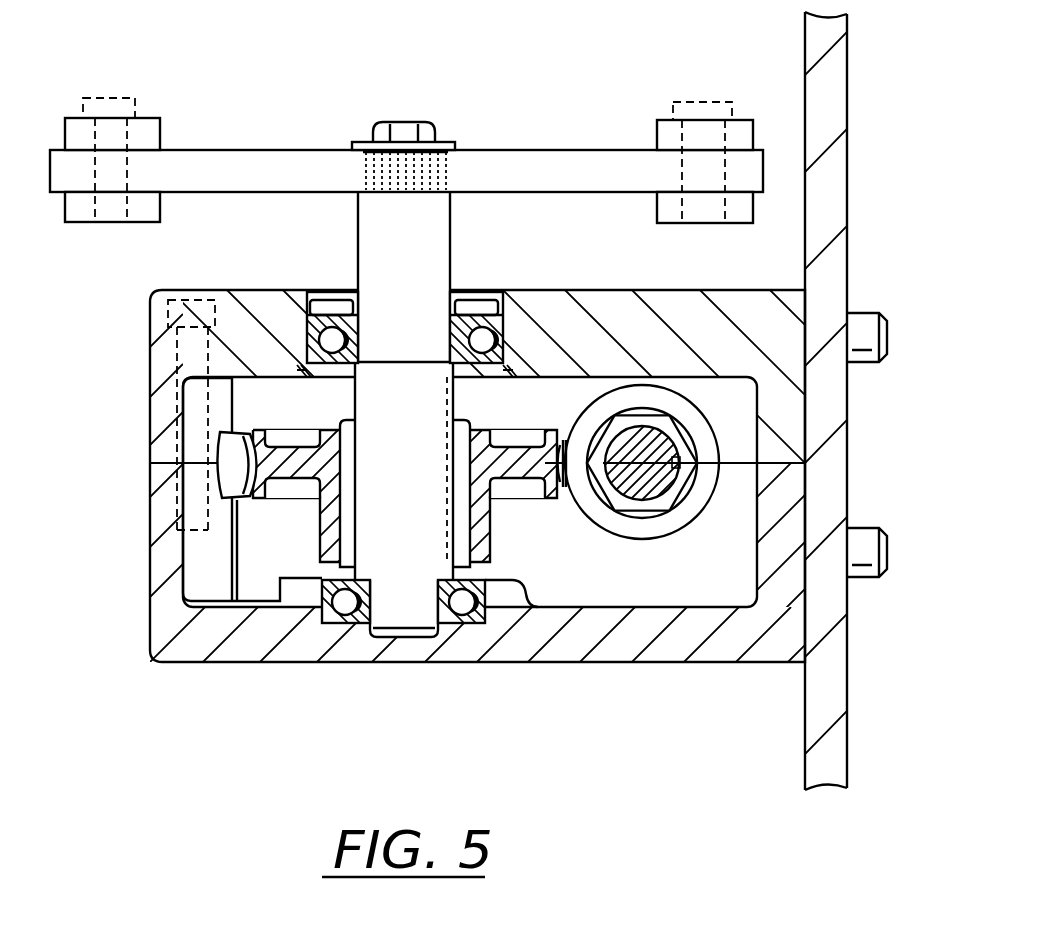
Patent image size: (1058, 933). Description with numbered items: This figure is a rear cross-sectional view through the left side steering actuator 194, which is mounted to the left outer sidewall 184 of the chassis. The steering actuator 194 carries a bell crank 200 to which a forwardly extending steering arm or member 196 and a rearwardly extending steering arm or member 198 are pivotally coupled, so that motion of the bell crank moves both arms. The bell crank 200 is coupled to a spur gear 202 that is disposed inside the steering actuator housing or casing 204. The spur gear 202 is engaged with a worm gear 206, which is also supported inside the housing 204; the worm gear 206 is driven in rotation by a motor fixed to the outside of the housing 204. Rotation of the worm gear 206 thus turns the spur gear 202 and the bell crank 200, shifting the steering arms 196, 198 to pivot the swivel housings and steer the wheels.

The left outer sidewall 184 is at (850, 176).
The steering actuator 194 is at (496, 474).
The forwardly extending steering arm 196 is at (168, 114).
The rearwardly extending steering arm 198 is at (663, 120).
The bell crank 200 is at (578, 104).
The spur gear 202 is at (222, 479).
The steering actuator housing 204 is at (573, 663).
The worm gear 206 is at (632, 541).